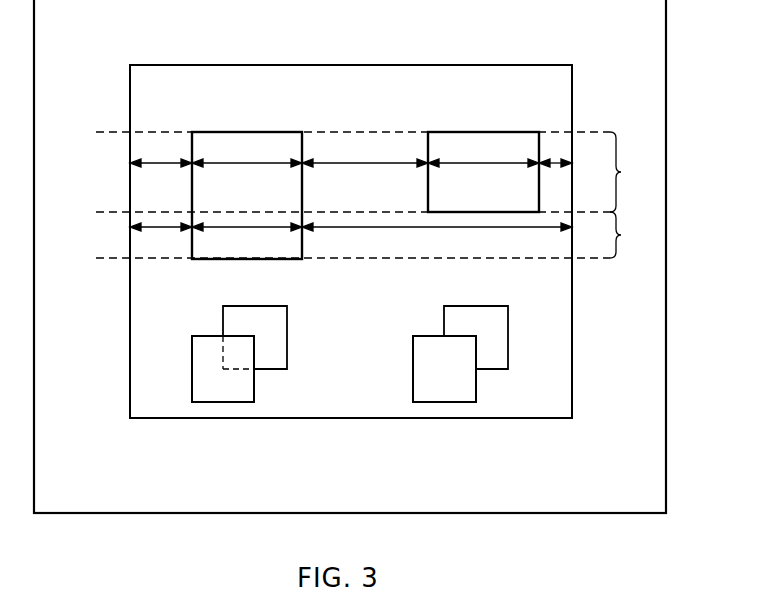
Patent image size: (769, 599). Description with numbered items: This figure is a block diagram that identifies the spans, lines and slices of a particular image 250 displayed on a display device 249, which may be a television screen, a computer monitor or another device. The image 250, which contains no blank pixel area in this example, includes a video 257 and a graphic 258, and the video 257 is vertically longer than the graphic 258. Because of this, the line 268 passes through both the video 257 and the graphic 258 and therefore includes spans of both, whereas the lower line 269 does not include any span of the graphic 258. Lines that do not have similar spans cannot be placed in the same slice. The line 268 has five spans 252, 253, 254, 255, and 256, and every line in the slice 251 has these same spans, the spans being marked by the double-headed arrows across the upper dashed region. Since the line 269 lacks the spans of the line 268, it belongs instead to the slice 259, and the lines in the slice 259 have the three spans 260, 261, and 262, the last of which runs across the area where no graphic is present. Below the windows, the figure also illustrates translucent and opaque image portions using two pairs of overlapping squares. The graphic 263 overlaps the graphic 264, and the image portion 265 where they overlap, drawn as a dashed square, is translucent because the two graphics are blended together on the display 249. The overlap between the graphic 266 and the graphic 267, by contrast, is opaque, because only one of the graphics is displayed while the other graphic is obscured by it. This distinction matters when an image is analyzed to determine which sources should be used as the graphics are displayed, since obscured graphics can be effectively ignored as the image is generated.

The display device 249 is at (666, 110).
The image 250 is at (458, 65).
The slice 251 is at (379, 172).
The span 252 is at (151, 165).
The span 253 is at (269, 165).
The span 254 is at (397, 165).
The span 255 is at (460, 163).
The span 256 is at (553, 163).
The video 257 is at (270, 137).
The graphic 258 is at (444, 137).
The slice 259 is at (379, 235).
The span 260 is at (151, 229).
The span 261 is at (287, 229).
The span 262 is at (432, 229).
The graphic 263 is at (226, 402).
The graphic 264 is at (273, 369).
The image portion 265 is at (224, 352).
The graphic 266 is at (445, 402).
The graphic 267 is at (492, 369).
The line 268 is at (131, 163).
The line 269 is at (131, 227).